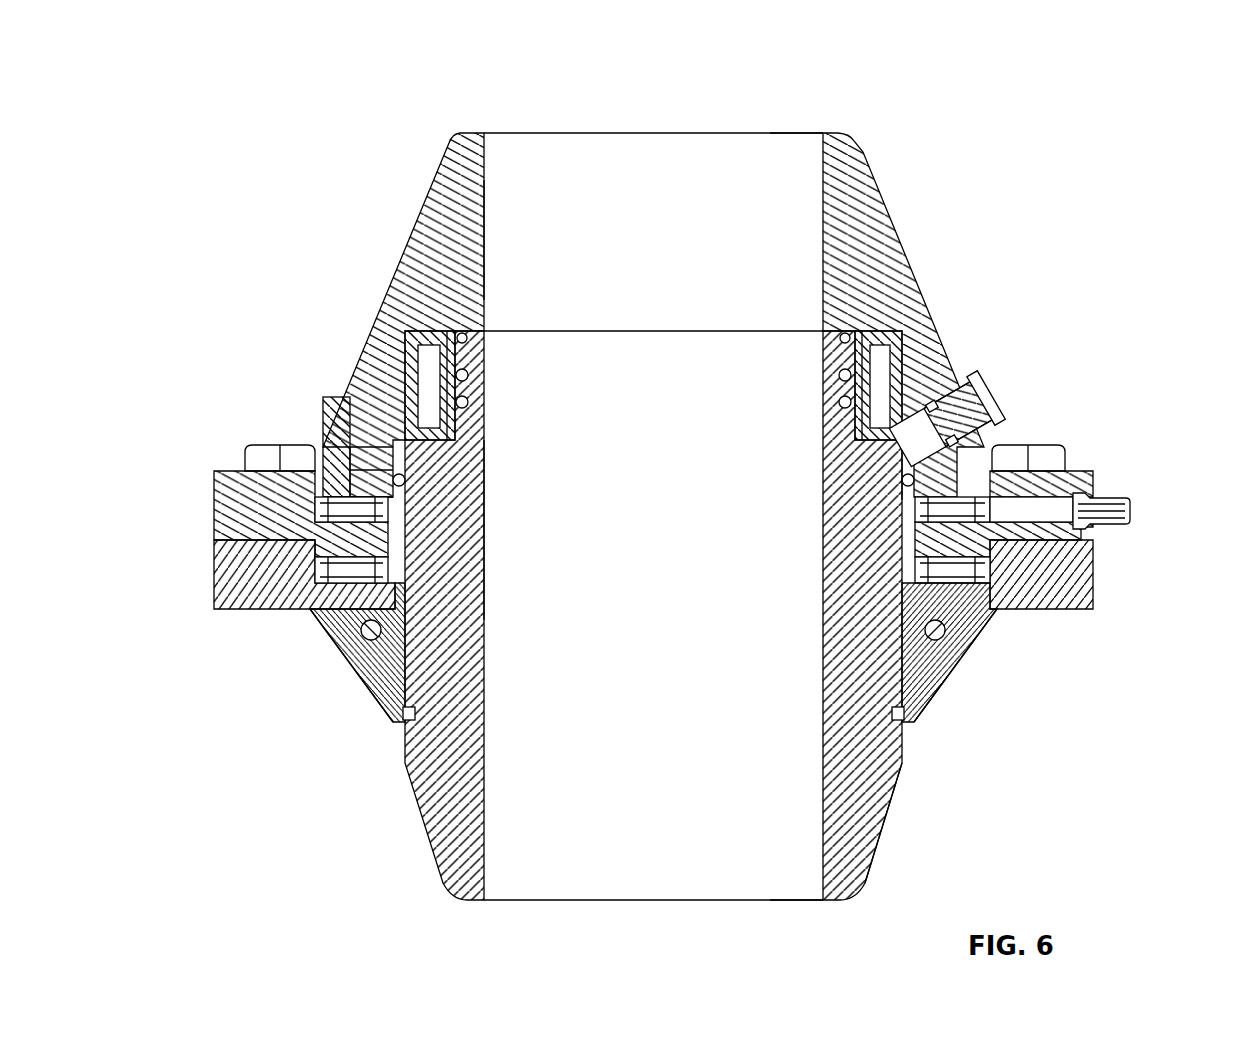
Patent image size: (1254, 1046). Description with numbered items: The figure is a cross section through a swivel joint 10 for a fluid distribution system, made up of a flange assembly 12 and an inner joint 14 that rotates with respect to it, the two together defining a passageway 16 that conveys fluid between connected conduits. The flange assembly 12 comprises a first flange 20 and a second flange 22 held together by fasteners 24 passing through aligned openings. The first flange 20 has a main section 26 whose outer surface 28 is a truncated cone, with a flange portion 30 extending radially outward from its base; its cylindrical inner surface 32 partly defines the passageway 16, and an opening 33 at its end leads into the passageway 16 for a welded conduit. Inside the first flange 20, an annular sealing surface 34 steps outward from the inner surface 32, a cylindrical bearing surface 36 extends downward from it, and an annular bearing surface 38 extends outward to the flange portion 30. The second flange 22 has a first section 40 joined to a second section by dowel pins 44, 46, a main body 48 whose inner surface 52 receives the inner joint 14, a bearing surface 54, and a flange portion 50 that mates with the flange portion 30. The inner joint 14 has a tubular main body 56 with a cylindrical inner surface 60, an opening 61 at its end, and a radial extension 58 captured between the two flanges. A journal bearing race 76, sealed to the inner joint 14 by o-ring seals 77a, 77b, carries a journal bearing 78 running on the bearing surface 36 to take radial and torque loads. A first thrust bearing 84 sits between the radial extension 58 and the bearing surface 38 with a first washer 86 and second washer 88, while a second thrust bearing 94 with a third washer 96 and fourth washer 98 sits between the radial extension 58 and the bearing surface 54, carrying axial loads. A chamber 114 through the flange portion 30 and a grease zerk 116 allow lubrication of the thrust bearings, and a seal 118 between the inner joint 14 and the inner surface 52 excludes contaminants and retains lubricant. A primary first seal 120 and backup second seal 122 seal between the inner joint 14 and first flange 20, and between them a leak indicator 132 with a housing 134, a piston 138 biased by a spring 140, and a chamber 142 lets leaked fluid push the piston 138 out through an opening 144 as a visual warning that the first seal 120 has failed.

The swivel joint 10 is at (1048, 74).
The flange assembly 12 is at (925, 315).
The inner joint 14 is at (822, 618).
The passageway 16 is at (486, 172).
The first flange 20 is at (885, 240).
The second flange 22 is at (958, 700).
The fastener 24 is at (300, 442).
The main section 26 is at (470, 152).
The outer surface 28 is at (403, 295).
The flange portion 30 is at (240, 512).
The inner surface 32 is at (487, 240).
The opening 33 is at (795, 132).
The annular sealing surface 34 is at (447, 333).
The cylindrical bearing surface 36 is at (365, 395).
The annular bearing surface 38 is at (1090, 470).
The first section 40 is at (380, 700).
The dowel pin 44 is at (336, 716).
The dowel pin 46 is at (995, 680).
The main body 48 is at (987, 625).
The flange portion 50 is at (240, 582).
The inner surface 52 is at (403, 722).
The bearing surface 54 is at (1036, 582).
The main body 56 is at (870, 832).
The radial extension 58 is at (1015, 543).
The inner surface 60 is at (486, 540).
The opening 61 is at (790, 905).
The journal bearing race 76 is at (452, 432).
The o-ring seal 77a is at (469, 376).
The o-ring seal 77b is at (469, 403).
The journal bearing 78 is at (855, 432).
The first thrust bearing 84 is at (345, 470).
The first washer 86 is at (380, 470).
The second washer 88 is at (360, 440).
The second thrust bearing 94 is at (340, 611).
The third washer 96 is at (368, 650).
The fourth washer 98 is at (372, 640).
The chamber 114 is at (1052, 500).
The grease zerk 116 is at (1110, 492).
The seal 118 is at (915, 745).
The first seal 120 is at (835, 342).
The second seal 122 is at (880, 500).
The leak indicator 132 is at (962, 462).
The housing 134 is at (945, 370).
The piston 138 is at (990, 392).
The spring 140 is at (975, 392).
The chamber 142 is at (905, 462).
The opening 144 is at (975, 400).